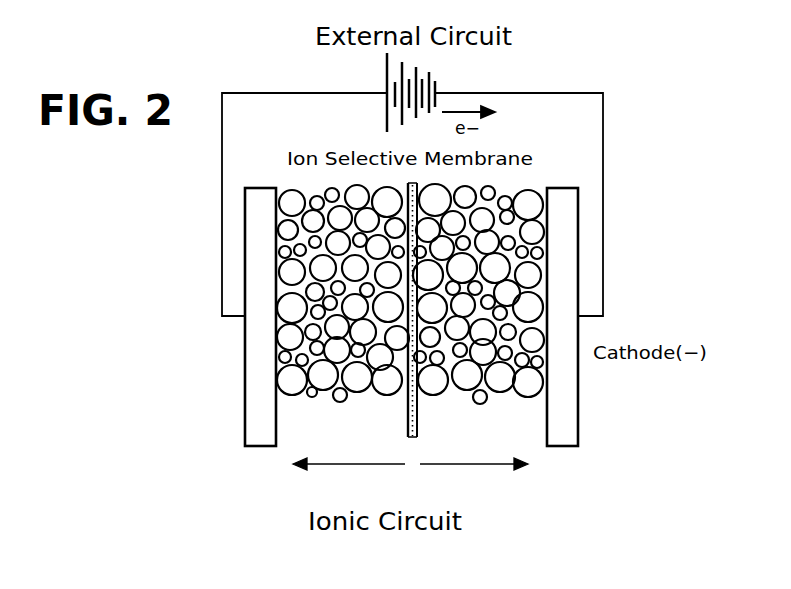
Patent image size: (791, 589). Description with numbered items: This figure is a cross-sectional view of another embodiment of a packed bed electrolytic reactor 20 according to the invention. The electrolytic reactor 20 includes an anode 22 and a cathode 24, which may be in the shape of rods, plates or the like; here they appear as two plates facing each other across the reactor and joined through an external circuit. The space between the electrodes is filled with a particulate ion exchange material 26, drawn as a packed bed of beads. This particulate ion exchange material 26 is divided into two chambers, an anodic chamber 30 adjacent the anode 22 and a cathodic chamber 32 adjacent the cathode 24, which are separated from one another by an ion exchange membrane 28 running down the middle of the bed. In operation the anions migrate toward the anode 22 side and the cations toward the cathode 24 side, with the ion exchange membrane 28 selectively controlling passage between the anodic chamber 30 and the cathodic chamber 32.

The electrolytic reactor 20 is at (624, 175).
The anode 22 is at (255, 420).
The cathode 24 is at (572, 421).
The particulate ion exchange material 26 is at (295, 192).
The ion exchange membrane 28 is at (408, 440).
The anodic chamber 30 is at (342, 428).
The cathodic chamber 32 is at (484, 428).